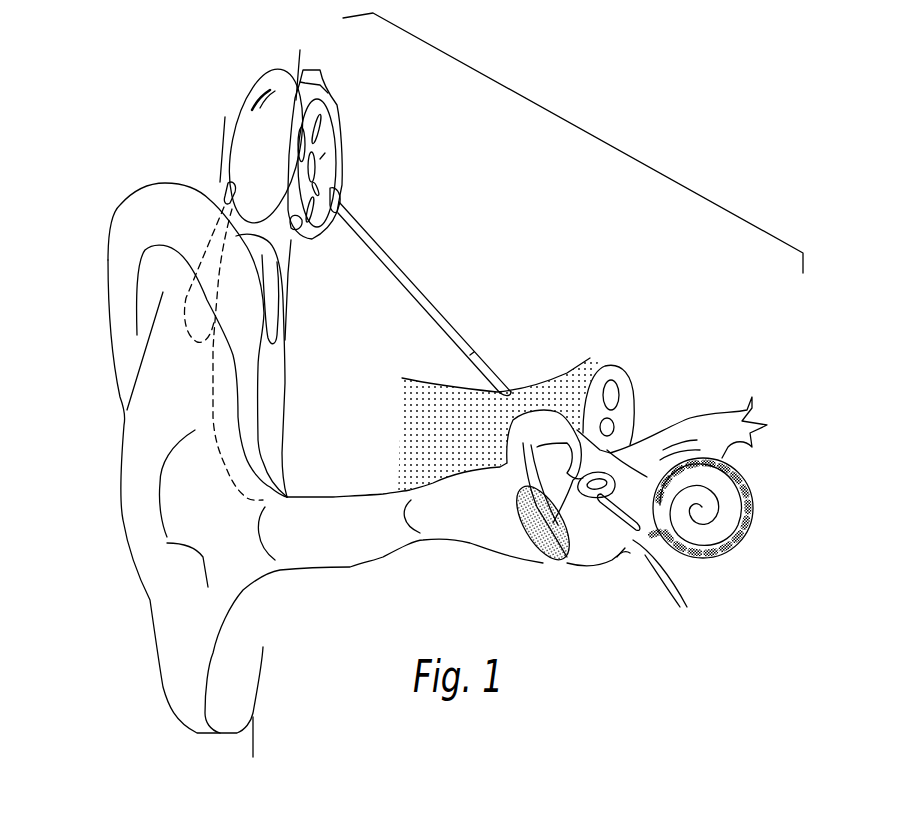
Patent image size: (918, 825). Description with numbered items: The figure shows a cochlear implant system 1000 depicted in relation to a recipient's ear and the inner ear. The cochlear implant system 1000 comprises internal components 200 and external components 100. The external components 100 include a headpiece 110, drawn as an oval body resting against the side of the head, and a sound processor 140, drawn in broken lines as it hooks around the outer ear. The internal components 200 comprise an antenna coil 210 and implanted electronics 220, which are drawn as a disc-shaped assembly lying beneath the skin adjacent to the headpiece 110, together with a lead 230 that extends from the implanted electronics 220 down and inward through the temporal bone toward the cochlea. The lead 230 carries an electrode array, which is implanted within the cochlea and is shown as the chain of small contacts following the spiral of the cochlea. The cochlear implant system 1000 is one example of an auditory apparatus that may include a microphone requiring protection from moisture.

The external components 100 is at (202, 178).
The headpiece 110 is at (245, 113).
The sound processor 140 is at (223, 276).
The internal components 200 is at (425, 183).
The antenna coil 210 is at (305, 82).
The implanted electronics 220 is at (320, 140).
The lead 230 is at (405, 273).
The cochlear implant system 1000 is at (630, 157).